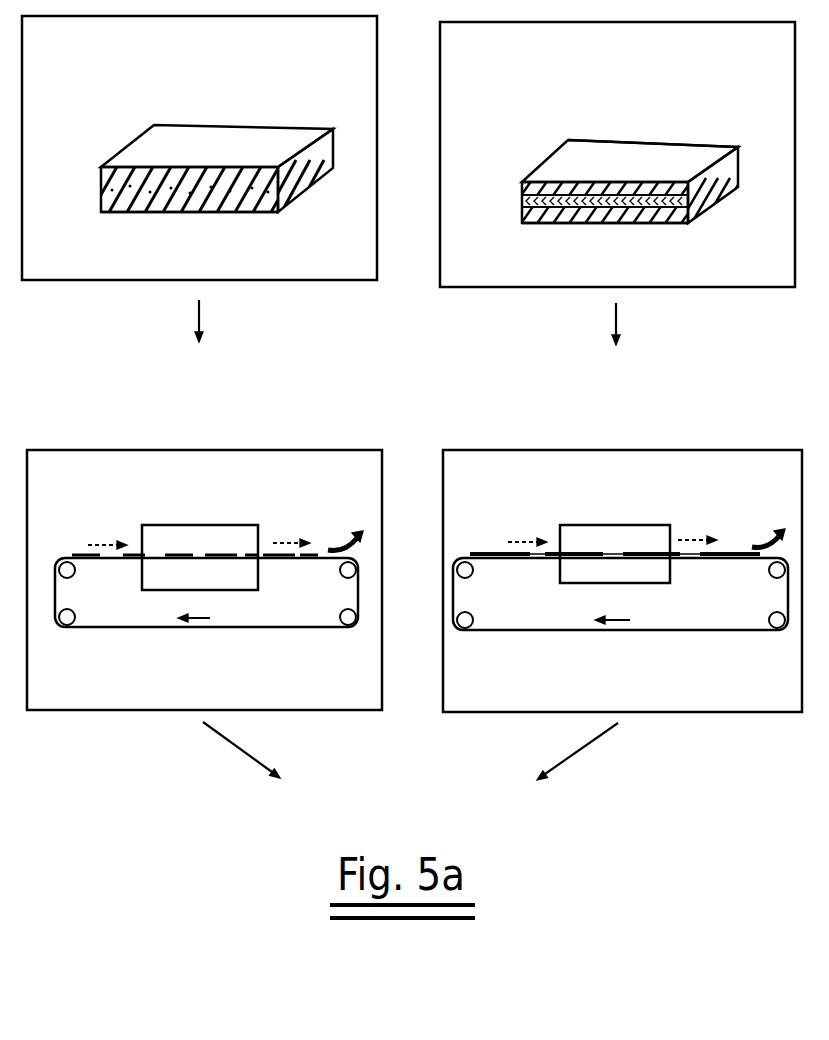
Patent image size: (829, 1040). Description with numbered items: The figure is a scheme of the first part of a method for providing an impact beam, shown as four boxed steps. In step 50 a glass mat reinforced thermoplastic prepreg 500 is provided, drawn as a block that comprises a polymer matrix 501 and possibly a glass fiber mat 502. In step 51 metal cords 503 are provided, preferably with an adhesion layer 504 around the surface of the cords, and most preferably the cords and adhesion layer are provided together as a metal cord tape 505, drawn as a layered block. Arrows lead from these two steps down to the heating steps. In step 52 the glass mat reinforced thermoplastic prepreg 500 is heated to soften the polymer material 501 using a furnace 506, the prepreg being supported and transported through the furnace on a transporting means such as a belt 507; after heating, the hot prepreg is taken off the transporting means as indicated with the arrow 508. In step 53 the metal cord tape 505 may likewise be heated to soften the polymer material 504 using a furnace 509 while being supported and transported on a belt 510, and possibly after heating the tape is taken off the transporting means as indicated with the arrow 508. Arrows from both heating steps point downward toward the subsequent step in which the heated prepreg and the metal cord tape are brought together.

The step of providing glass mat reinforced thermoplastic prepreg 50 is at (92, 131).
The step of providing metal cord tape 51 is at (498, 148).
The step of heating the prepreg 52 is at (82, 492).
The step of heating the metal cord tape 53 is at (497, 497).
The glass mat reinforced thermoplastic prepreg 500 is at (193, 93).
The polymer matrix 501 is at (233, 107).
The glass fiber mat 502 is at (189, 232).
The metal cords 503 is at (605, 244).
The adhesion layer 504 is at (655, 118).
The metal cord tape 505 is at (600, 115).
The furnace 506 is at (155, 610).
The belt 507 is at (206, 623).
The arrow 508 is at (513, 505).
The furnace 509 is at (570, 606).
The belt 510 is at (620, 623).